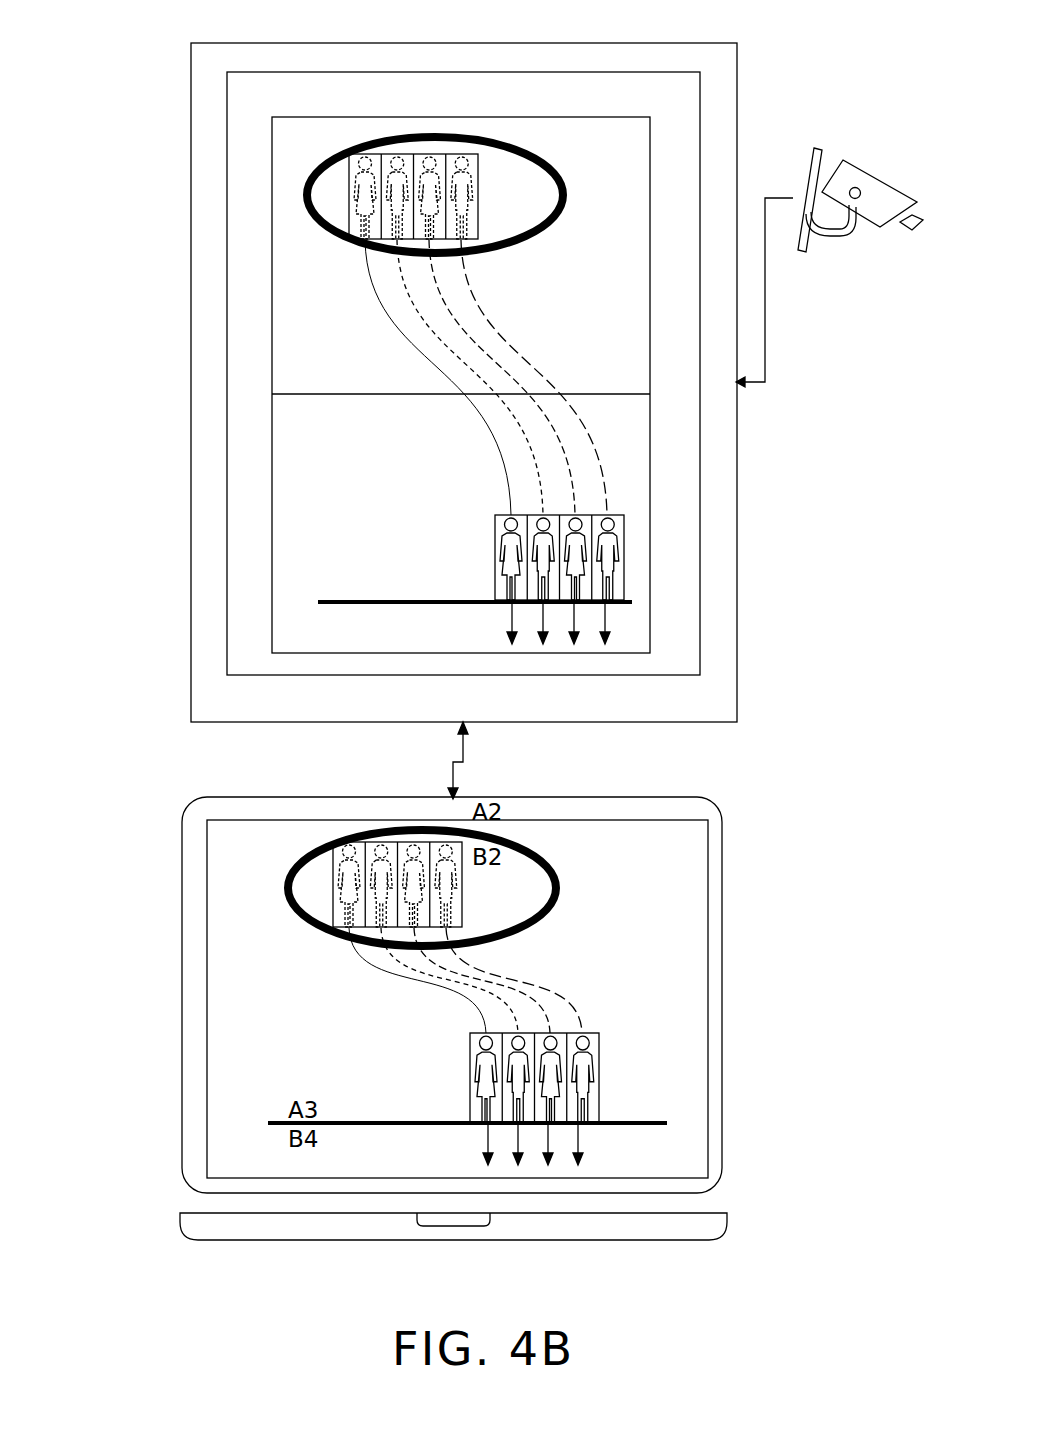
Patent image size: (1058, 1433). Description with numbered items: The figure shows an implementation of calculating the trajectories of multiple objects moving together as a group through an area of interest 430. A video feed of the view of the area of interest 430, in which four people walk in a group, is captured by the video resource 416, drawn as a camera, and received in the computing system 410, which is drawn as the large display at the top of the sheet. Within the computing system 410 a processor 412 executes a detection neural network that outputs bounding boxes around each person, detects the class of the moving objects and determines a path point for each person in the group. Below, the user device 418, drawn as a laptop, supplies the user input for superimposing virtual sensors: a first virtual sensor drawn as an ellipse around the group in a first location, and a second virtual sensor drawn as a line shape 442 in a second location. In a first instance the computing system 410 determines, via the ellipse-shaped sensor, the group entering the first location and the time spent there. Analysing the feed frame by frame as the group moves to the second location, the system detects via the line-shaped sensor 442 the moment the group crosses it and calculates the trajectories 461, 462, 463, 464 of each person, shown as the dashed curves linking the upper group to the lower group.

The computing system 410 is at (602, 53).
The processor 412 is at (675, 93).
The video resource 416 is at (852, 160).
The user device 418 is at (262, 812).
The area of interest 430 is at (282, 145).
The line shape 442 is at (268, 1125).
The trajectory 461 is at (477, 408).
The trajectory 462 is at (513, 410).
The trajectory 463 is at (547, 412).
The trajectory 464 is at (578, 415).